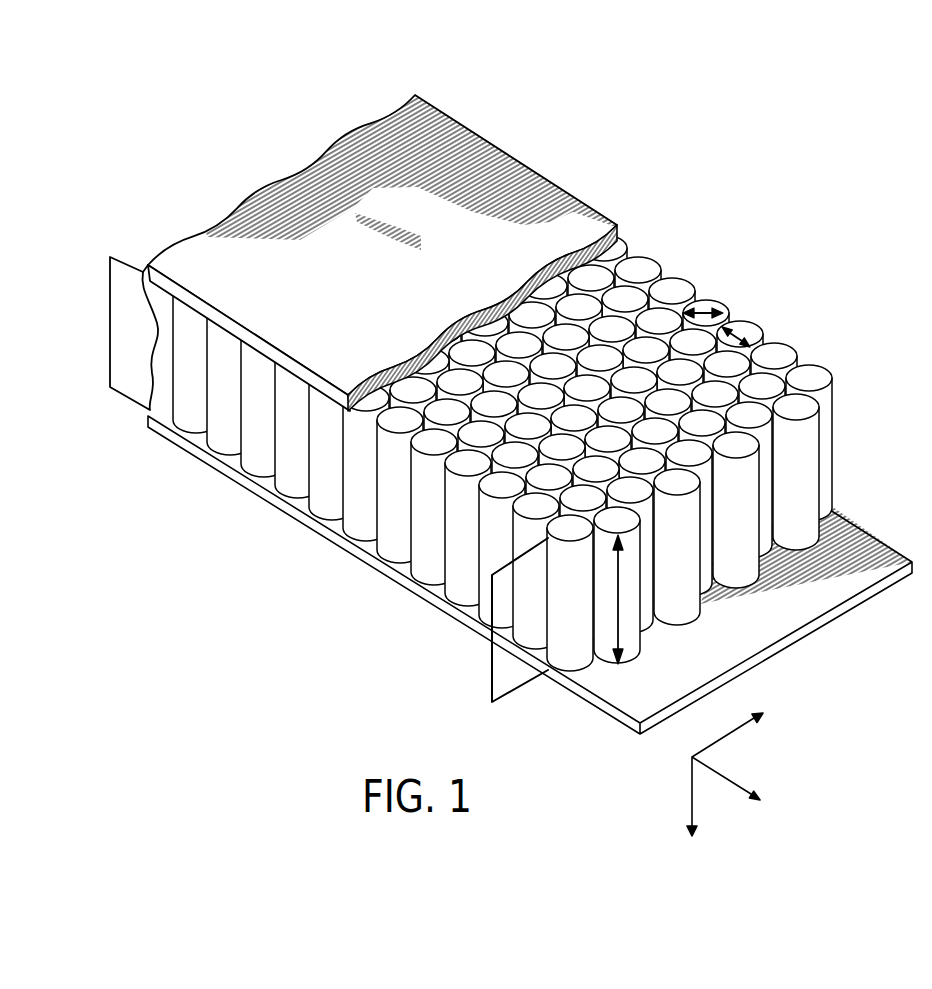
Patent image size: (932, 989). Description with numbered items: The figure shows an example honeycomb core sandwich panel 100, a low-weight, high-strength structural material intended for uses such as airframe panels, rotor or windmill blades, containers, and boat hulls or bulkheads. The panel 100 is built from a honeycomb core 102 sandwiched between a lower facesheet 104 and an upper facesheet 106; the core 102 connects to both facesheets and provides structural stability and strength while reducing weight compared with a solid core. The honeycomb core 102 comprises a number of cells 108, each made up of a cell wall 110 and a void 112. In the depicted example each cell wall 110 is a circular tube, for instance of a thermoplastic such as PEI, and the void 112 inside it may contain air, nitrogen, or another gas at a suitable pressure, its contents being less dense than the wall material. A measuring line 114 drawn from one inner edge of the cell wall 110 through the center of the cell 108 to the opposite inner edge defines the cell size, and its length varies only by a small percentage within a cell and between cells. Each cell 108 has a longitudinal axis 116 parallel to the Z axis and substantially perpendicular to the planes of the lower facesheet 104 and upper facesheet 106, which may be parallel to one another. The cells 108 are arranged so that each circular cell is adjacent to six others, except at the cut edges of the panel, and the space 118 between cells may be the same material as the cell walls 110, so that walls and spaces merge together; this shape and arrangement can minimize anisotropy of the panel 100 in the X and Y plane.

The honeycomb core sandwich panel 100 is at (161, 46).
The honeycomb core 102 is at (110, 317).
The lower facesheet 104 is at (748, 632).
The upper facesheet 106 is at (531, 207).
The cell 108 is at (489, 643).
The cell wall 110 is at (548, 405).
The void 112 is at (797, 408).
The measuring line 114 is at (737, 327).
The longitudinal axis 116 is at (618, 603).
The space 118 is at (703, 310).